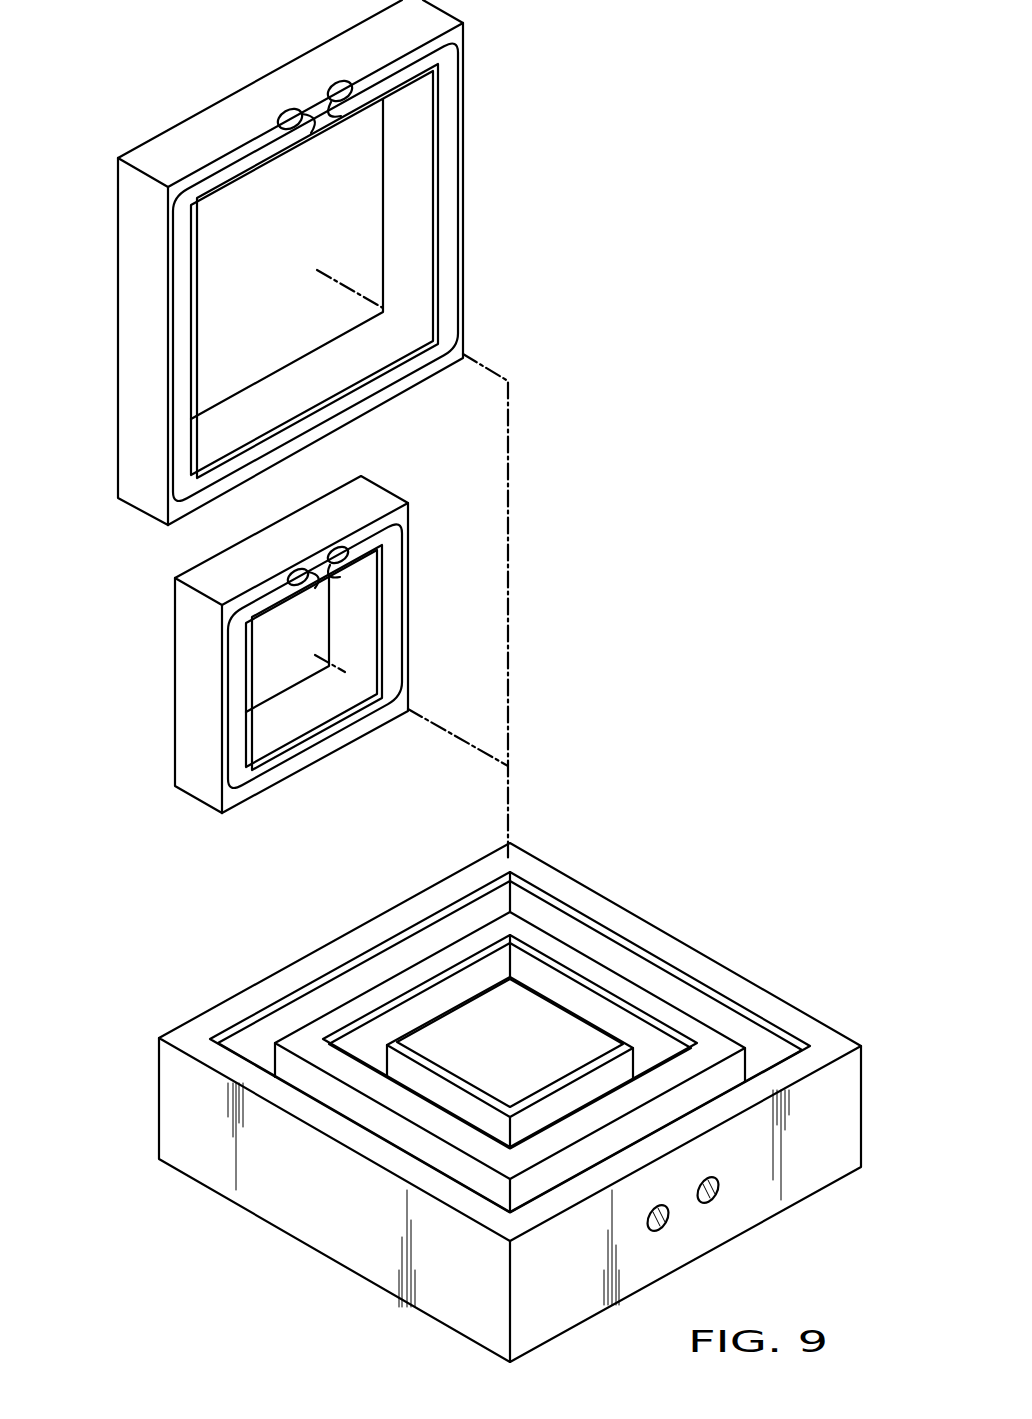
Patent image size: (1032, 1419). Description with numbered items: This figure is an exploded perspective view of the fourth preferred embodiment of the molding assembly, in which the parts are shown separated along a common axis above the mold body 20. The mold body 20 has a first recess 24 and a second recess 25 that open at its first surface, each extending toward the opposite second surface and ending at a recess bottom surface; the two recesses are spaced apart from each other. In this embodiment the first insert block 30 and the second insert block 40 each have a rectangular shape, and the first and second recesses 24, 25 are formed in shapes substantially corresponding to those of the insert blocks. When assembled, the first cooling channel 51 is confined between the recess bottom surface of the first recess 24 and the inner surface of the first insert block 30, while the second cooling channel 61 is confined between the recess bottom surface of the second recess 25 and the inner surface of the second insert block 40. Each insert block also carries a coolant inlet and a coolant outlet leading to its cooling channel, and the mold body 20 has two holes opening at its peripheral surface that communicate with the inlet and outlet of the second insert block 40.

The mold body 20 is at (538, 1095).
The first recess 24 is at (600, 1010).
The second recess 25 is at (518, 1020).
The first insert block 30 is at (218, 644).
The second insert block 40 is at (248, 262).
The first cooling channel 51 is at (233, 730).
The second cooling channel 61 is at (178, 443).